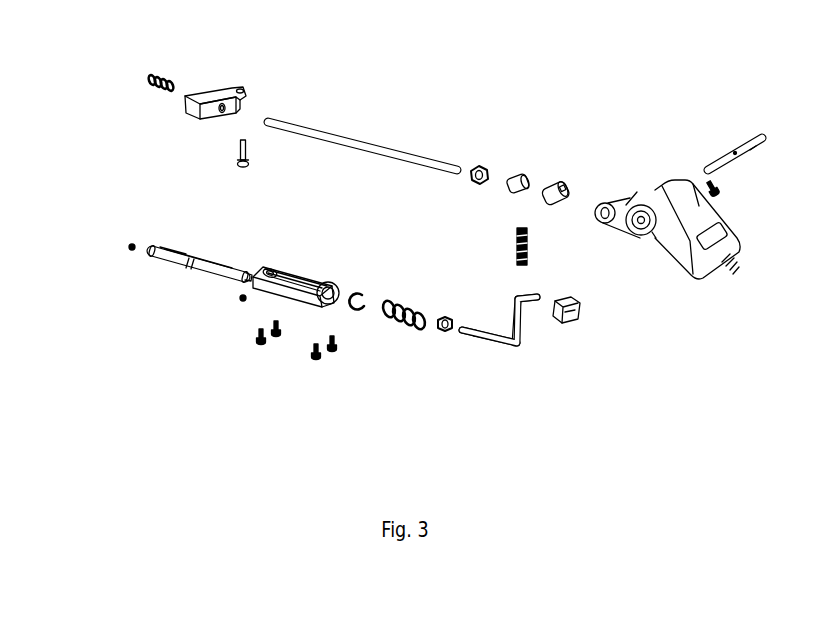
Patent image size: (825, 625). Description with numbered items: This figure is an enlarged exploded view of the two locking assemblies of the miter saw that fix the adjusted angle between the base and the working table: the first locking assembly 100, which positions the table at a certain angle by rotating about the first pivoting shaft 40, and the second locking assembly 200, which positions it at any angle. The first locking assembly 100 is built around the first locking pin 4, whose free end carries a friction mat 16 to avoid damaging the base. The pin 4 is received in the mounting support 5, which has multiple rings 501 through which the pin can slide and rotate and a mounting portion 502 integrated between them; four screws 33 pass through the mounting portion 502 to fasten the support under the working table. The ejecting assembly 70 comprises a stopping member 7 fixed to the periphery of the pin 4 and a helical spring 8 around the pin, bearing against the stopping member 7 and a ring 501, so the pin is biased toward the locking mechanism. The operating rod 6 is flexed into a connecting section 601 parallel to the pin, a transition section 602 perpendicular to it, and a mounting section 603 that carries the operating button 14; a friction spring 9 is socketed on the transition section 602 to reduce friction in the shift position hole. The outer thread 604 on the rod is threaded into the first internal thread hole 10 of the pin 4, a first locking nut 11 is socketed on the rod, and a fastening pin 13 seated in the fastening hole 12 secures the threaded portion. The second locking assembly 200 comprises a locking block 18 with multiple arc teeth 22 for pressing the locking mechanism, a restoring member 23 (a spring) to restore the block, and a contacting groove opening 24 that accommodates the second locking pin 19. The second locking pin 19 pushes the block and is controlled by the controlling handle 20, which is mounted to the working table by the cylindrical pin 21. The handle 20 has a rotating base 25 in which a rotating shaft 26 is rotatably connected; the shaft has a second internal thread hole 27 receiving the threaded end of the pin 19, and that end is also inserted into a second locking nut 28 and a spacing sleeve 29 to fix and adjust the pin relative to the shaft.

The first locking assembly 100 is at (162, 253).
The second locking assembly 200 is at (362, 91).
The first locking pin 4 is at (184, 283).
The first pivoting shaft 40 is at (165, 261).
The mounting support 5 is at (309, 282).
The rings 501 is at (263, 270).
The mounting portion 502 is at (299, 271).
The operating rod 6 is at (524, 359).
The connecting section 601 is at (485, 334).
The transition section 602 is at (527, 325).
The mounting section 603 is at (522, 295).
The outer thread 604 is at (463, 334).
The stopping member 7 is at (357, 311).
The helical spring 8 is at (402, 319).
The ejecting assembly 70 is at (404, 368).
The friction spring 9 is at (517, 245).
The first internal thread hole 10 is at (246, 272).
The first locking nut 11 is at (443, 332).
The fastening hole 12 is at (243, 268).
The fastening pin 13 is at (242, 300).
The operating button 14 is at (580, 317).
The friction mat 16 is at (130, 250).
The locking block 18 is at (203, 96).
The second locking pin 19 is at (377, 143).
The controlling handle 20 is at (691, 199).
The cylindrical pin 21 is at (765, 140).
The arc teeth 22 is at (212, 103).
The restoring member 23 is at (153, 76).
The contacting groove opening 24 is at (220, 112).
The rotating base 25 is at (625, 200).
The rotating shaft 26 is at (573, 157).
The second internal thread hole 27 is at (567, 187).
The second locking nut 28 is at (480, 167).
The spacing sleeve 29 is at (520, 177).
The screws 33 is at (258, 343).